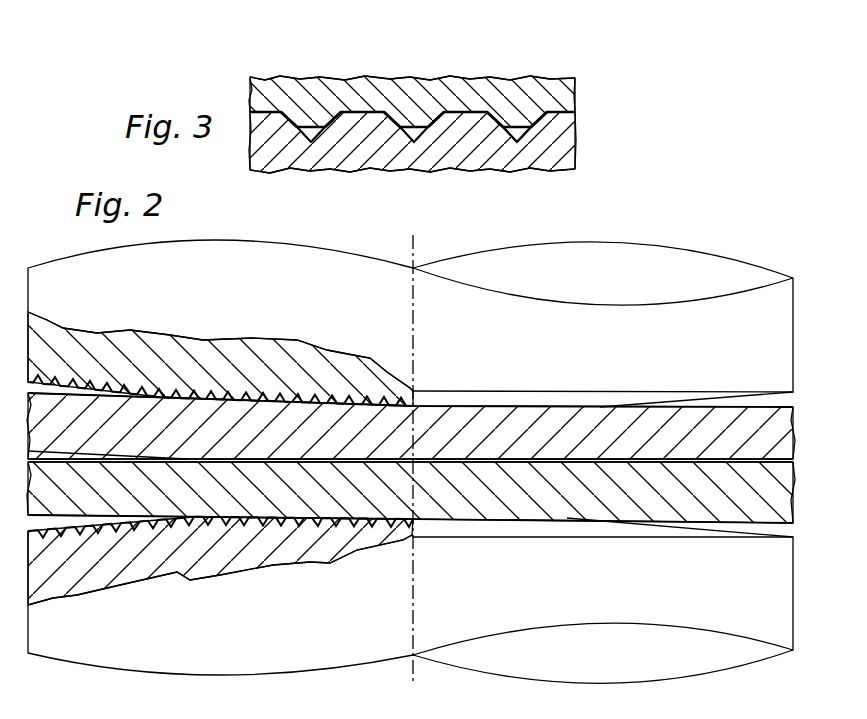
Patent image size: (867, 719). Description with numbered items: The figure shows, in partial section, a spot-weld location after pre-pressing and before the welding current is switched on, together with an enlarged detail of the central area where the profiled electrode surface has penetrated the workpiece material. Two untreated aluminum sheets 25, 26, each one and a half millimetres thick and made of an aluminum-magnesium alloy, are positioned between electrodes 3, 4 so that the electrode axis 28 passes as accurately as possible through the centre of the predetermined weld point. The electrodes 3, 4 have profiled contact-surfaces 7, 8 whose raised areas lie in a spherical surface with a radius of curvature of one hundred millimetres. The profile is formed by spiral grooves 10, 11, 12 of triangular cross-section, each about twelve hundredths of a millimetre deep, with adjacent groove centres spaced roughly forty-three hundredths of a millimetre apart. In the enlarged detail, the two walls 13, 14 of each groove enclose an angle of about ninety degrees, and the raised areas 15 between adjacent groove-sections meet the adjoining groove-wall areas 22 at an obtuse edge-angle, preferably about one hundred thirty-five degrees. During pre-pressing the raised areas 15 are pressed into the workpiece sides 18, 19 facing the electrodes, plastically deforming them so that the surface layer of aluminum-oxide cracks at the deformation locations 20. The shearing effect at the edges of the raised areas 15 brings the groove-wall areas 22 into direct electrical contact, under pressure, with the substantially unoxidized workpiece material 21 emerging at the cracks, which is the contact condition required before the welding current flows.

In FIG. 2, the electrode 3 is at (185, 288).
In FIG. 2, the electrode 4 is at (203, 648).
In FIG. 2, the profiled contact-surface 7 is at (358, 396).
In FIG. 2, the profiled contact-surface 8 is at (373, 523).
In FIG. 3, the spiral groove 10 is at (310, 143).
In FIG. 2, the spiral groove 11 is at (35, 382).
In FIG. 2, the spiral groove 12 is at (47, 530).
In FIG. 3, the groove wall 13 is at (530, 140).
In FIG. 3, the groove wall 14 is at (502, 150).
In FIG. 3, the raised area 15 is at (258, 80).
In FIG. 2, the workpiece side 18 is at (767, 405).
In FIG. 2, the workpiece side 19 is at (762, 522).
In FIG. 3, the deformation location 20 is at (282, 111).
In FIG. 3, the unoxidized workpiece material 21 is at (292, 123).
In FIG. 3, the groove-wall area 22 is at (575, 137).
In FIG. 2, the aluminum sheet 25 is at (582, 422).
In FIG. 2, the aluminum sheet 26 is at (577, 503).
In FIG. 2, the electrode axis 28 is at (413, 575).